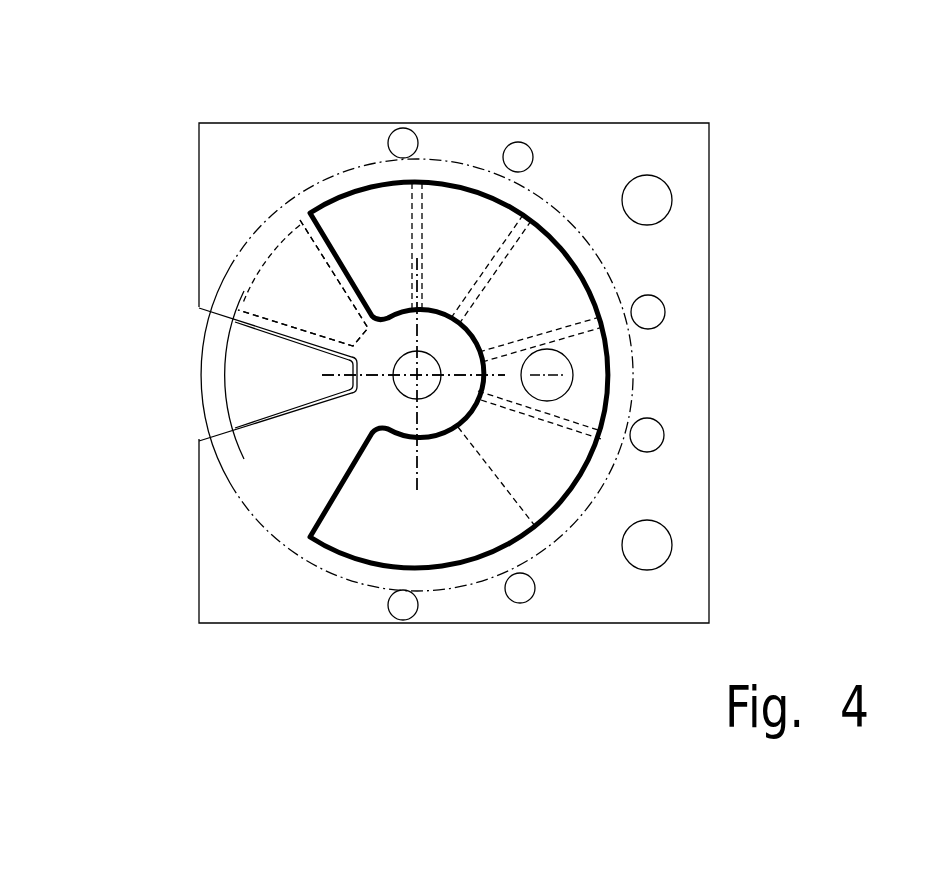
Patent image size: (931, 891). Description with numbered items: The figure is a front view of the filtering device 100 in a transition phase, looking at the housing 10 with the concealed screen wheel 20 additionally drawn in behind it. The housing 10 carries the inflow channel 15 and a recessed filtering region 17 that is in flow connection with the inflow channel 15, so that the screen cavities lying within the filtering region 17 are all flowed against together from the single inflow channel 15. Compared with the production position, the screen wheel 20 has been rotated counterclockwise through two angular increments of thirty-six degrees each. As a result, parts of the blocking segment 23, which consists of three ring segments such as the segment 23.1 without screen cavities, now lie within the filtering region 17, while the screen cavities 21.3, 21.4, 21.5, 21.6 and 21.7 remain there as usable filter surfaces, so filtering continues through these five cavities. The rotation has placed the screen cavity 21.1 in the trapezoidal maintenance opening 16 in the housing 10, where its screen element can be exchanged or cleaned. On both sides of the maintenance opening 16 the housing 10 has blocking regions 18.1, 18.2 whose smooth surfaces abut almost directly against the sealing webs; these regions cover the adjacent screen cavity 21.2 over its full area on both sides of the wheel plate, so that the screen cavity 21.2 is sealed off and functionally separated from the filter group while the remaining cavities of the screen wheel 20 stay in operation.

The filtering device 100 is at (145, 98).
The housing 10 is at (279, 130).
The inflow channel 15 is at (548, 375).
The maintenance opening 16 is at (199, 430).
The filtering region 17 is at (585, 287).
The screen wheel 20 is at (199, 403).
The screen cavity 21.1 is at (280, 373).
The screen cavity 21.2 is at (335, 303).
The screen cavity 21.3 is at (392, 218).
The screen cavity 21.4 is at (483, 218).
The screen cavity 21.5 is at (537, 268).
The screen cavity 21.6 is at (580, 343).
The screen cavity 21.7 is at (538, 469).
The blocking segment 23 is at (430, 523).
The segment of the blocking segment 23.1 is at (283, 477).
The blocking region 18.1 is at (267, 404).
The blocking region 18.2 is at (198, 274).